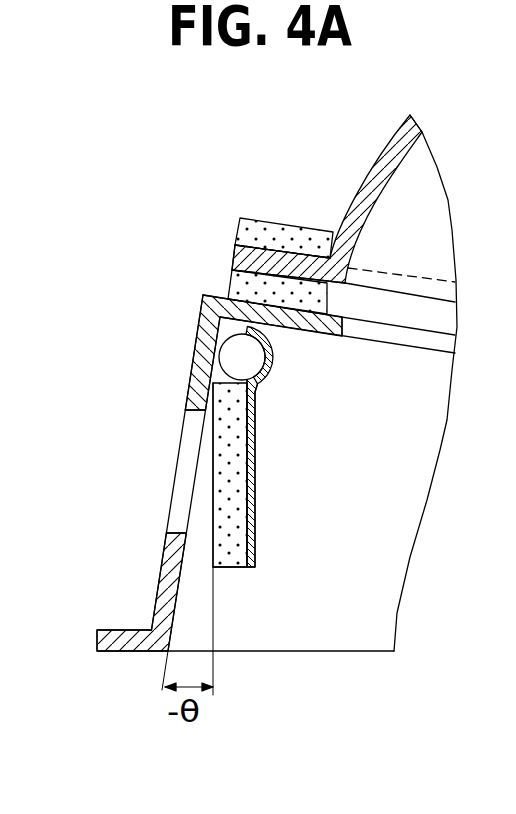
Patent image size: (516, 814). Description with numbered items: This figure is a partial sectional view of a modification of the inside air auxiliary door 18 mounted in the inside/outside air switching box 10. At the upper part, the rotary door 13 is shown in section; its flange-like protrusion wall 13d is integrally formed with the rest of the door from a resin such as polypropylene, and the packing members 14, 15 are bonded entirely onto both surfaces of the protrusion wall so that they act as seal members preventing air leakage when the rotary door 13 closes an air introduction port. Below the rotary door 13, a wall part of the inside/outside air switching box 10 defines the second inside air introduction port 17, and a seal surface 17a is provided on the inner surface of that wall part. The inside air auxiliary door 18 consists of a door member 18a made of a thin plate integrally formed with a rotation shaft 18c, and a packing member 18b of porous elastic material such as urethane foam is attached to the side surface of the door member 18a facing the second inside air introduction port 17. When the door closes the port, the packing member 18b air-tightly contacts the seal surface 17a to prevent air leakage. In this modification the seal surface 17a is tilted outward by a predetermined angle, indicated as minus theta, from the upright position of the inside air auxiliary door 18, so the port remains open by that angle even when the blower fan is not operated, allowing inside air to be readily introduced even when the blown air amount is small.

The inside/outside air switching box 10 is at (160, 562).
The rotary door 13 is at (383, 143).
The flange-like protrusion wall 13d is at (240, 252).
The packing member 14 is at (277, 237).
The packing member 15 is at (237, 282).
The second inside air introduction port 17 is at (183, 442).
The seal surface 17a is at (187, 543).
The inside air auxiliary door 18 is at (223, 472).
The door member 18a is at (247, 512).
The packing member 18b is at (215, 405).
The rotation shaft 18c is at (237, 350).